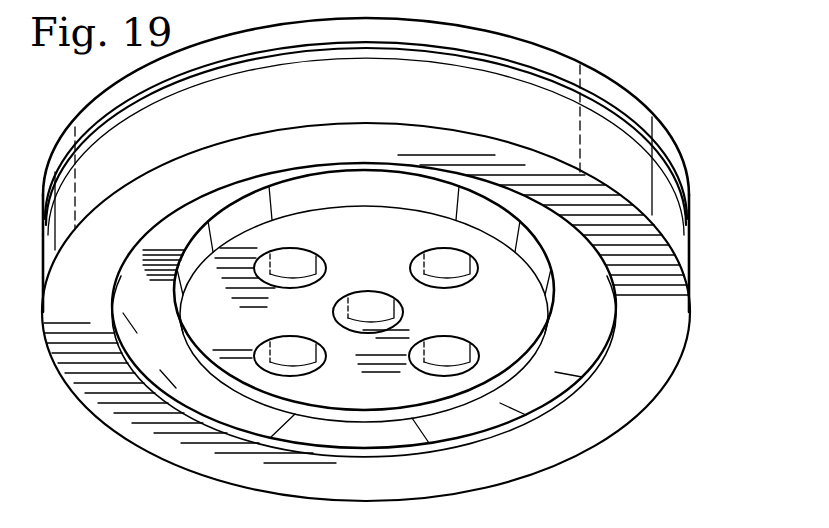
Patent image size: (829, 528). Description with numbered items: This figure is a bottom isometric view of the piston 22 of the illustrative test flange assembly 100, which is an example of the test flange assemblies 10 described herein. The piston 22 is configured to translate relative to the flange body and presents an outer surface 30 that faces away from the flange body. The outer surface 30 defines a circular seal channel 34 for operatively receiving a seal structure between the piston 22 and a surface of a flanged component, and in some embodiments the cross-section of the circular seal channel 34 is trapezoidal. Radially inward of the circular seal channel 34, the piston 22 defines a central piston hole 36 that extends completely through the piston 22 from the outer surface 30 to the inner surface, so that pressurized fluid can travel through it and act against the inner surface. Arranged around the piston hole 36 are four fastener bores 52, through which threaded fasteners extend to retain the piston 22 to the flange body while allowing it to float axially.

The test flange assembly 10 is at (720, 41).
The piston 22 is at (681, 103).
The test flange assembly 100 is at (674, 74).
The circular seal channel 34 is at (575, 320).
The outer surface 30 is at (351, 403).
The piston hole 36 is at (350, 312).
The fastener bores 52 is at (292, 284).